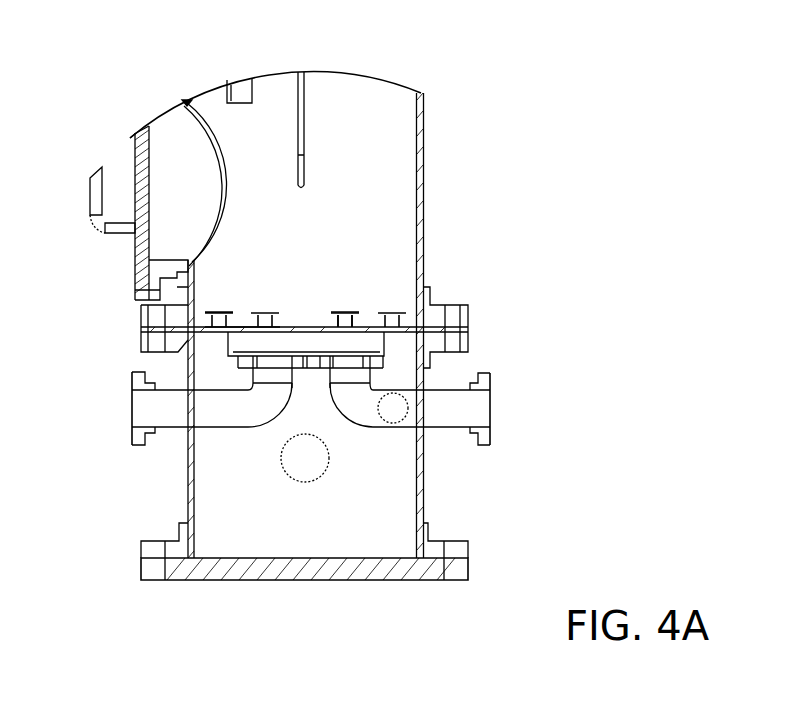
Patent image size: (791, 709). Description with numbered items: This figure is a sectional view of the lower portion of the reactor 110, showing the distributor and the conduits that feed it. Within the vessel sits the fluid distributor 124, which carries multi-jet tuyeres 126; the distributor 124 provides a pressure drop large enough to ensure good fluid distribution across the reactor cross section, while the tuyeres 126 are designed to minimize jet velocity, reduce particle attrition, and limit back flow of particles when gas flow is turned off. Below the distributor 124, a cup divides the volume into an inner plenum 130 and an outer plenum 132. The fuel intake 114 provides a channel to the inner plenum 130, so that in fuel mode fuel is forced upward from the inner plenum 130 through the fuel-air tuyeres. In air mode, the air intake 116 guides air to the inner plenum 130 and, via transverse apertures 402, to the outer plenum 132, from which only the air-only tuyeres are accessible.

The reactor 110 is at (331, 37).
The fuel intake 114 is at (131, 411).
The air intake 116 is at (490, 410).
The fluid distributor 124 is at (298, 312).
The multi-jet tuyeres 126 is at (344, 305).
The inner plenum 130 is at (243, 333).
The outer plenum 132 is at (275, 536).
The transverse apertures 402 is at (393, 428).